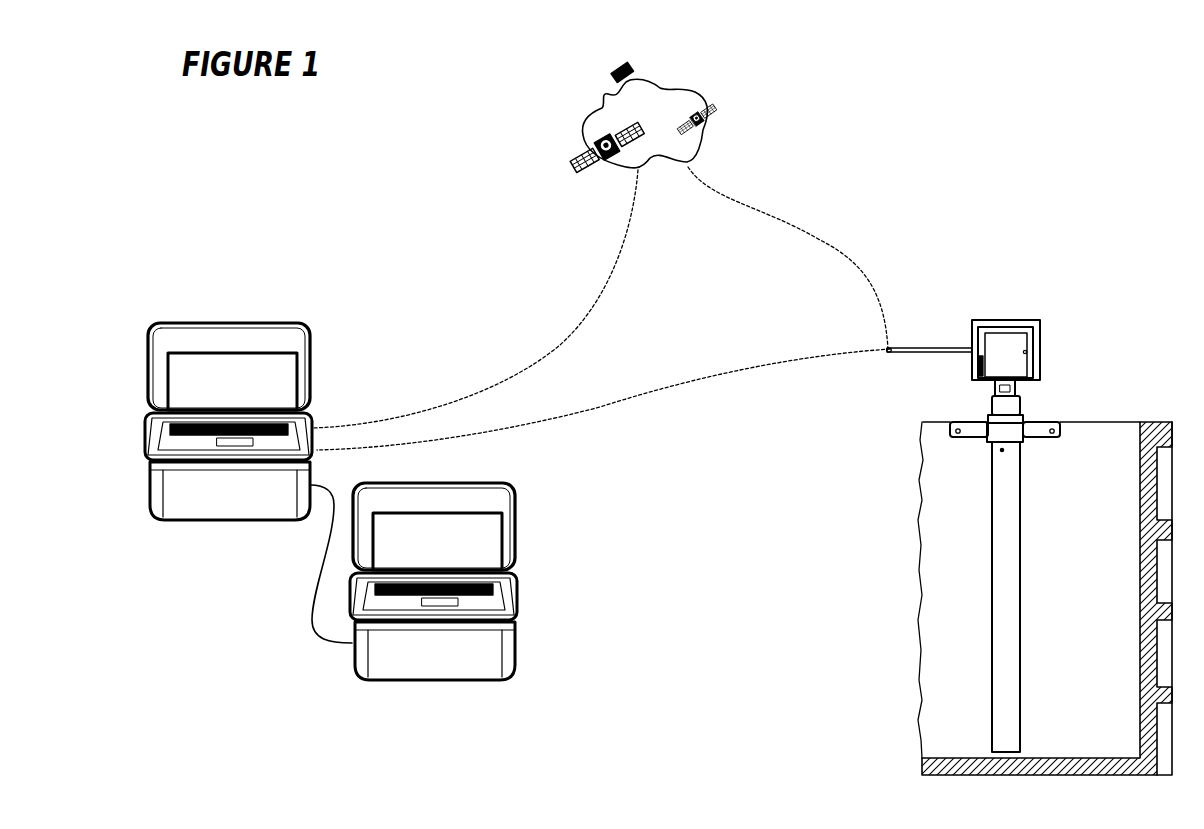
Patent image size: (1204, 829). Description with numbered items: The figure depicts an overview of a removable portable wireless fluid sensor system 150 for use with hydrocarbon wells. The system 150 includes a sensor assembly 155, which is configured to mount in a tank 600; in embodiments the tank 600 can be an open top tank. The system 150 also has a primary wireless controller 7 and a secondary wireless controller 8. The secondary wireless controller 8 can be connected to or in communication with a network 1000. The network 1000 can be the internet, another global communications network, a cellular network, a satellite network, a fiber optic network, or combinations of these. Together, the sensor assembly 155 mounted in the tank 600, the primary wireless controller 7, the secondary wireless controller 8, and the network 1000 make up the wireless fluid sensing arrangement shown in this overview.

The removable portable wireless fluid sensor system 150 is at (160, 133).
The secondary wireless controller 8 is at (229, 500).
The primary wireless controller 7 is at (437, 660).
The network 1000 is at (685, 90).
The sensor assembly 155 is at (1075, 314).
The tank 600 is at (1150, 422).